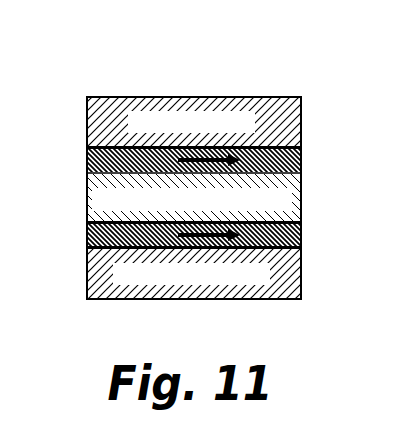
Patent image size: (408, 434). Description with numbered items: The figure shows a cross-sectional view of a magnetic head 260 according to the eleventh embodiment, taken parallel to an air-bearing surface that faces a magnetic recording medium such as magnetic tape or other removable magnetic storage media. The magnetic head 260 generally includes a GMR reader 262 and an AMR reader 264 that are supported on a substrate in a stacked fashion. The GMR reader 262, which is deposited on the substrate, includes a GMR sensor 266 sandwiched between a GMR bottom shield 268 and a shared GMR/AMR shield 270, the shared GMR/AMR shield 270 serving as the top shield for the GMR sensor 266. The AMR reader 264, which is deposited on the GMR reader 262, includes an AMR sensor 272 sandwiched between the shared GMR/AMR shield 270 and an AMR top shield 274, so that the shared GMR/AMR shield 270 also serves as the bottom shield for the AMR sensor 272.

The magnetic head 260 is at (303, 64).
The GMR reader 262 is at (60, 173).
The AMR reader 264 is at (78, 222).
The GMR sensor 266 is at (301, 250).
The GMR bottom shield 268 is at (301, 280).
The shared GMR/AMR shield 270 is at (301, 197).
The AMR sensor 272 is at (301, 173).
The AMR top shield 274 is at (301, 115).